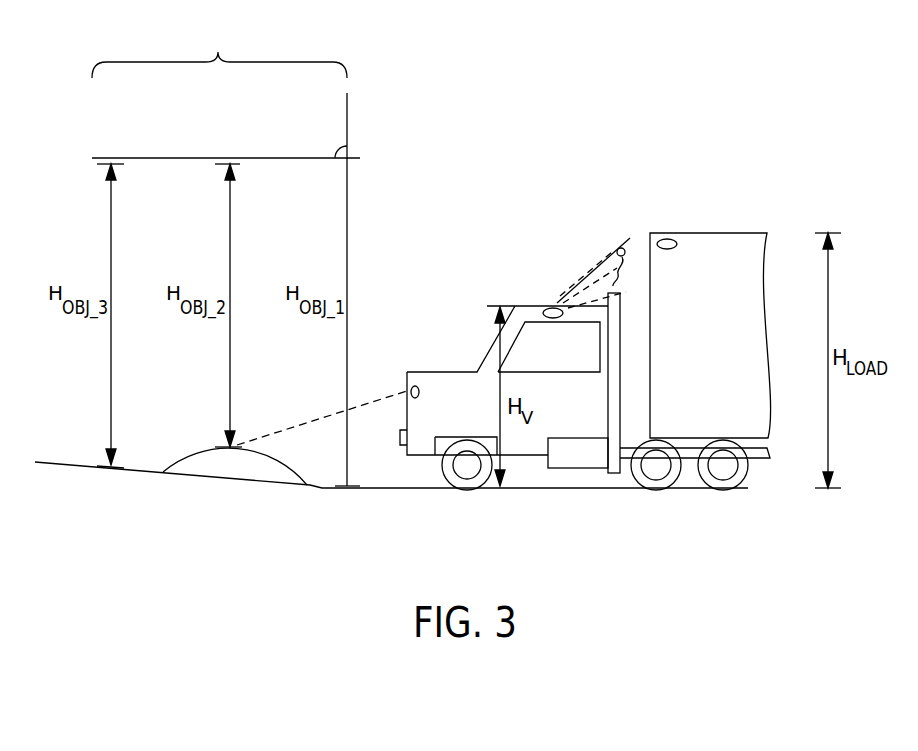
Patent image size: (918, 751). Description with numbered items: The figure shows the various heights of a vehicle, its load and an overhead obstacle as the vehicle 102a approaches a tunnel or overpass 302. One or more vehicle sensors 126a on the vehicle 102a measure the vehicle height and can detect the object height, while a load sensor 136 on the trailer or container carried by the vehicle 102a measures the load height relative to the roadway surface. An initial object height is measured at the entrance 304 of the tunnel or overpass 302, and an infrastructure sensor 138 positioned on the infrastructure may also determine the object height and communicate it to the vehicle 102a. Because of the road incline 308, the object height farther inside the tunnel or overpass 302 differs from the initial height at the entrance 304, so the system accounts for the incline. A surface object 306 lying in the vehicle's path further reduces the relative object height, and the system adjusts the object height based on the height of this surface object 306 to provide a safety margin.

The tunnel or overpass 302 is at (219, 49).
The entrance 304 is at (333, 158).
The infrastructure sensor 138 is at (355, 150).
The road incline 308 is at (72, 468).
The surface object 306 is at (252, 470).
The vehicle 102a is at (447, 372).
The load sensor 136 is at (668, 238).
The vehicle sensor 126a is at (553, 308).